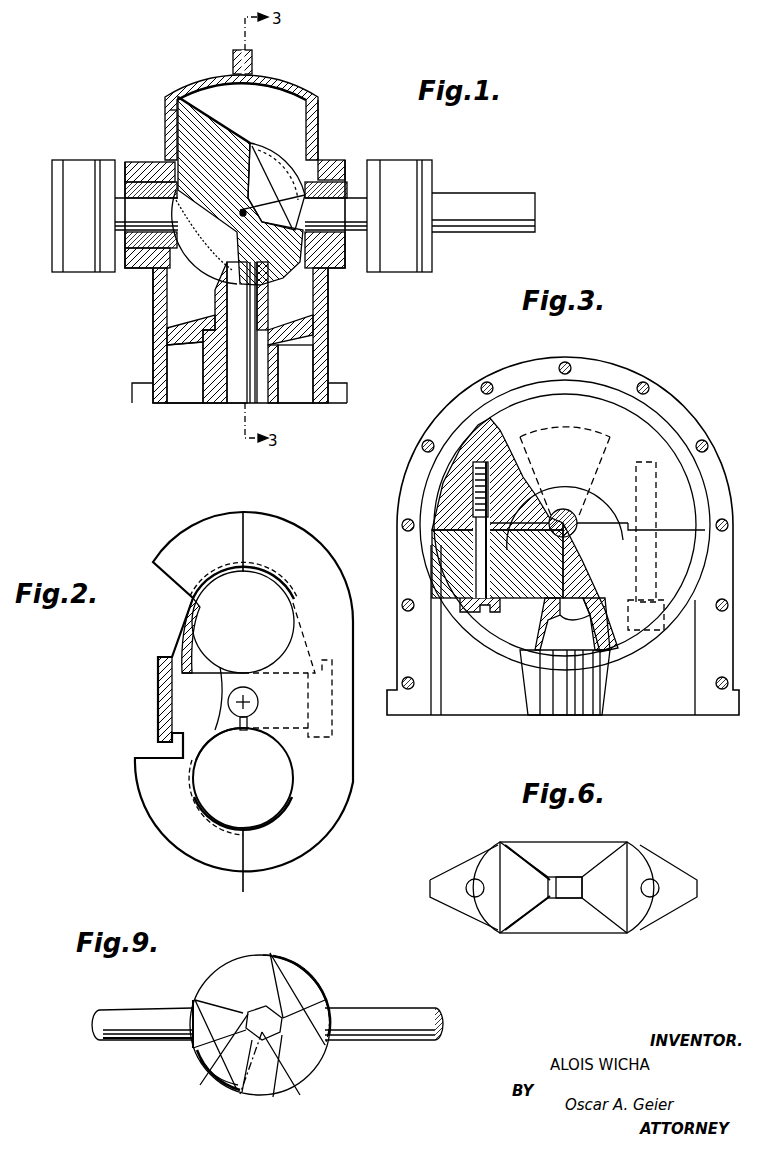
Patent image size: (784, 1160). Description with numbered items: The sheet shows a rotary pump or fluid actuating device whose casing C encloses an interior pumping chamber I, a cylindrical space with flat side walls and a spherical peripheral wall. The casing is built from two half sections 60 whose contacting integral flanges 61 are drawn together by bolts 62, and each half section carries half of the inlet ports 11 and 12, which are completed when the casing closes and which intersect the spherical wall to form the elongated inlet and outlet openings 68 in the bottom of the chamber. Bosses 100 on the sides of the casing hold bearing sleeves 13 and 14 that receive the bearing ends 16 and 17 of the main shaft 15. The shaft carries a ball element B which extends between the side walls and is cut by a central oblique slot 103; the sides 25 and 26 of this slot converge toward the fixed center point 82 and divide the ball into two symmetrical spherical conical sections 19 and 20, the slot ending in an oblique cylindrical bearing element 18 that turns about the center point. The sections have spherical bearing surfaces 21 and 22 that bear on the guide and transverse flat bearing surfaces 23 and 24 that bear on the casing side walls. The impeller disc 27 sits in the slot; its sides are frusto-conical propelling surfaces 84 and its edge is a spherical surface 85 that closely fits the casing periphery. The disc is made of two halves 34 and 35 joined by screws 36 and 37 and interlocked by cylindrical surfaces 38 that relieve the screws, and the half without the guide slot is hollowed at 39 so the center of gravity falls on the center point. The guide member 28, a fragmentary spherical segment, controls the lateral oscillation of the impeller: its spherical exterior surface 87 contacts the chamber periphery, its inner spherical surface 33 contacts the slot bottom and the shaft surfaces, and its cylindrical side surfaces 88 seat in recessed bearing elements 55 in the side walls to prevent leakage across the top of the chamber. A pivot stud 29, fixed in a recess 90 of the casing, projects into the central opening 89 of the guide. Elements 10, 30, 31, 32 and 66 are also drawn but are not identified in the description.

In FIG. 1, the valve casing 10 is at (330, 313).
In FIG. 2, the valve casing 10 is at (330, 568).
In FIG. 3, the inlet port 11 is at (478, 705).
In FIG. 2, the inlet port 11 is at (262, 602).
In FIG. 3, the inlet port 12 is at (652, 700).
In FIG. 2, the inlet port 12 is at (258, 805).
In FIG. 1, the bearing sleeve 13 is at (140, 268).
In FIG. 1, the bearing sleeve 14 is at (347, 262).
In FIG. 1, the main shaft 15 is at (512, 200).
In FIG. 9, the main shaft 15 is at (452, 1027).
In FIG. 1, the bearing end 16 is at (340, 200).
In FIG. 9, the bearing end 16 is at (418, 1016).
In FIG. 1, the bearing end 17 is at (146, 175).
In FIG. 9, the bearing end 17 is at (160, 1016).
In FIG. 1, the oblique cylindrical bearing element 18 is at (328, 155).
In FIG. 3, the oblique cylindrical bearing element 18 is at (575, 522).
In FIG. 9, the oblique cylindrical bearing element 18 is at (252, 1000).
In FIG. 1, the spherical conical section 19 is at (155, 325).
In FIG. 9, the spherical conical section 19 is at (225, 1090).
In FIG. 1, the spherical conical section 20 is at (318, 140).
In FIG. 9, the spherical conical section 20 is at (320, 1000).
In FIG. 1, the spherical bearing surface 21 is at (205, 235).
In FIG. 9, the spherical bearing surface 21 is at (208, 1078).
In FIG. 1, the spherical bearing surface 22 is at (250, 205).
In FIG. 9, the spherical bearing surface 22 is at (308, 990).
In FIG. 1, the transverse flat bearing surface 23 is at (153, 275).
In FIG. 9, the transverse flat bearing surface 23 is at (205, 1050).
In FIG. 1, the transverse flat bearing surface 24 is at (340, 182).
In FIG. 9, the transverse flat bearing surface 24 is at (327, 1018).
In FIG. 1, the conical surface 25 is at (205, 292).
In FIG. 9, the conical surface 25 is at (212, 990).
In FIG. 1, the conical surface 26 is at (262, 140).
In FIG. 9, the conical surface 26 is at (305, 1068).
In FIG. 1, the impeller disc 27 is at (230, 95).
In FIG. 3, the impeller disc 27 is at (525, 405).
In FIG. 2, the impeller disc 27 is at (228, 790).
In FIG. 6, the impeller disc 27 is at (565, 940).
In FIG. 1, the guide member 28 is at (312, 330).
In FIG. 3, the guide member 28 is at (585, 668).
In FIG. 2, the guide member 28 is at (205, 688).
In FIG. 1, the pivot stud 29 is at (238, 385).
In FIG. 3, the pivot stud 29 is at (562, 690).
In FIG. 2, the pivot stud 29 is at (260, 702).
In FIG. 3, the bracket 30 is at (528, 680).
In FIG. 3, the bracket 31 is at (532, 660).
In FIG. 3, the nut 32 is at (580, 650).
In FIG. 1, the inner spherical surface 33 is at (272, 322).
In FIG. 3, the inner spherical surface 33 is at (588, 592).
In FIG. 3, the impeller half 34 is at (440, 550).
In FIG. 6, the impeller half 34 is at (488, 850).
In FIG. 3, the impeller half 35 is at (437, 482).
In FIG. 3, the screw 36 is at (470, 615).
In FIG. 3, the screw 37 is at (657, 622).
In FIG. 3, the interlocking cylindrical surface 38 is at (630, 525).
In FIG. 6, the interlocking cylindrical surface 38 is at (492, 928).
In FIG. 3, the hollowed portion 39 is at (604, 362).
In FIG. 1, the recessed bearing element 55 is at (160, 305).
In FIG. 2, the recessed bearing element 55 is at (322, 688).
In FIG. 1, the casing half section 60 is at (140, 395).
In FIG. 1, the integral flange 61 is at (252, 58).
In FIG. 3, the integral flange 61 is at (432, 428).
In FIG. 3, the bolt 62 is at (488, 380).
In FIG. 1, the cap wall 66 is at (320, 108).
In FIG. 3, the elongated inlet and outlet opening 68 is at (443, 620).
In FIG. 1, the fixed center point 82 is at (238, 213).
In FIG. 3, the fixed center point 82 is at (566, 510).
In FIG. 2, the fixed center point 82 is at (245, 690).
In FIG. 6, the fixed center point 82 is at (566, 888).
In FIG. 9, the fixed center point 82 is at (268, 1022).
In FIG. 1, the frusto-conical propelling surface 84 is at (222, 128).
In FIG. 6, the frusto-conical propelling surface 84 is at (452, 866).
In FIG. 1, the spherical edge surface 85 is at (172, 97).
In FIG. 6, the spherical edge surface 85 is at (700, 888).
In FIG. 1, the spherical exterior surface 87 is at (155, 368).
In FIG. 3, the spherical exterior surface 87 is at (586, 690).
In FIG. 2, the spherical exterior surface 87 is at (180, 700).
In FIG. 3, the cylindrical side surface 88 is at (545, 680).
In FIG. 1, the central opening 89 is at (232, 300).
In FIG. 3, the central opening 89 is at (592, 618).
In FIG. 1, the recess 90 is at (248, 408).
In FIG. 3, the recess 90 is at (550, 700).
In FIG. 2, the recess 90 is at (245, 732).
In FIG. 1, the boss 100 is at (140, 160).
In FIG. 9, the central oblique slot 103 is at (246, 950).
In FIG. 1, the ball element B is at (178, 222).
In FIG. 9, the ball element B is at (205, 1030).
In FIG. 1, the casing C is at (167, 406).
In FIG. 3, the casing C is at (430, 718).
In FIG. 2, the casing C is at (130, 825).
In FIG. 2, the interior pumping chamber I is at (180, 730).